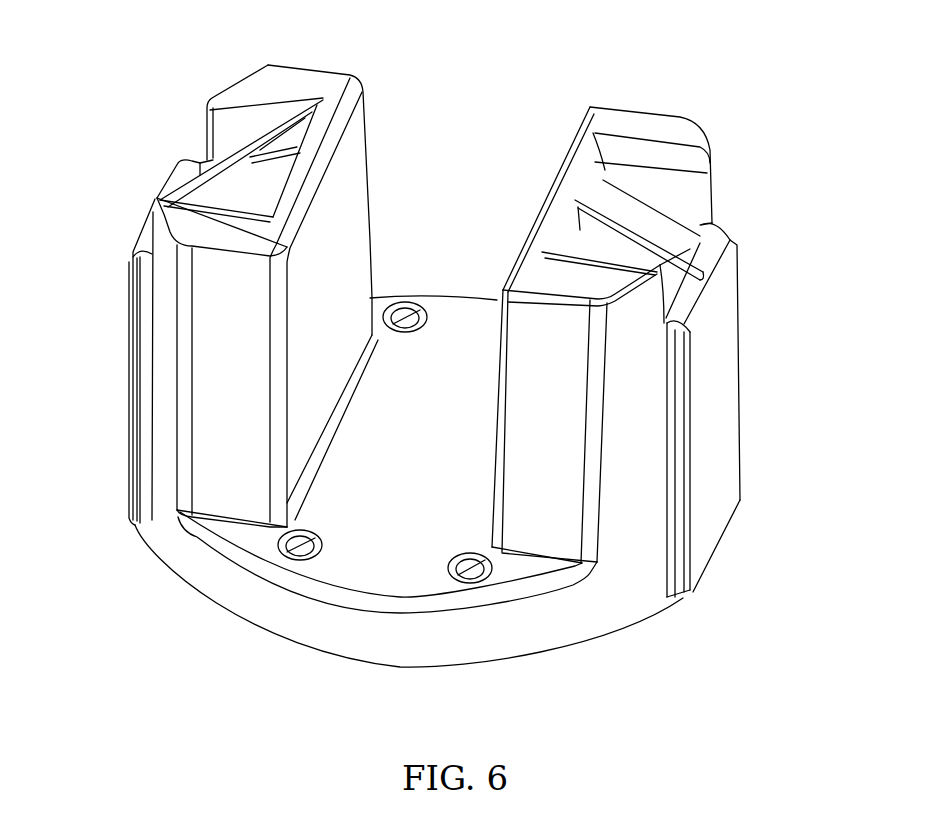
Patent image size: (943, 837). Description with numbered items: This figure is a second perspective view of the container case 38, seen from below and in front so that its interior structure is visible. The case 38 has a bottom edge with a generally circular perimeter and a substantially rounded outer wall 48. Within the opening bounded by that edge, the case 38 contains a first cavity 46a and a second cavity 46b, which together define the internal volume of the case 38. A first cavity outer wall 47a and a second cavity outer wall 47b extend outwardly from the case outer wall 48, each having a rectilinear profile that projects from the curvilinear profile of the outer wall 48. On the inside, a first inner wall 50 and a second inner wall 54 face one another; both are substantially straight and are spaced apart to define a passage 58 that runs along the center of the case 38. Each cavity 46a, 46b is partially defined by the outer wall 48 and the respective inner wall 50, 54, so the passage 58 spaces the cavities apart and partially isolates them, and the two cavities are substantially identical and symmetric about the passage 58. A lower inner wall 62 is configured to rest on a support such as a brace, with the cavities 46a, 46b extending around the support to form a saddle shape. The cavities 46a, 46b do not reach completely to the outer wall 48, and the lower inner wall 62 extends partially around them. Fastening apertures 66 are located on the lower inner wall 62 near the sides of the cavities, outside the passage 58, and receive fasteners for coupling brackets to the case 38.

The case 38 is at (206, 54).
The first cavity 46a is at (165, 363).
The second cavity 46b is at (638, 377).
The first cavity outer wall 47a is at (131, 305).
The second cavity outer wall 47b is at (717, 350).
The outer wall 48 is at (490, 643).
The first inner wall 50 is at (352, 168).
The second inner wall 54 is at (560, 160).
The passage 58 is at (403, 508).
The lower inner wall 62 is at (457, 348).
The fastening apertures 66 is at (412, 302).